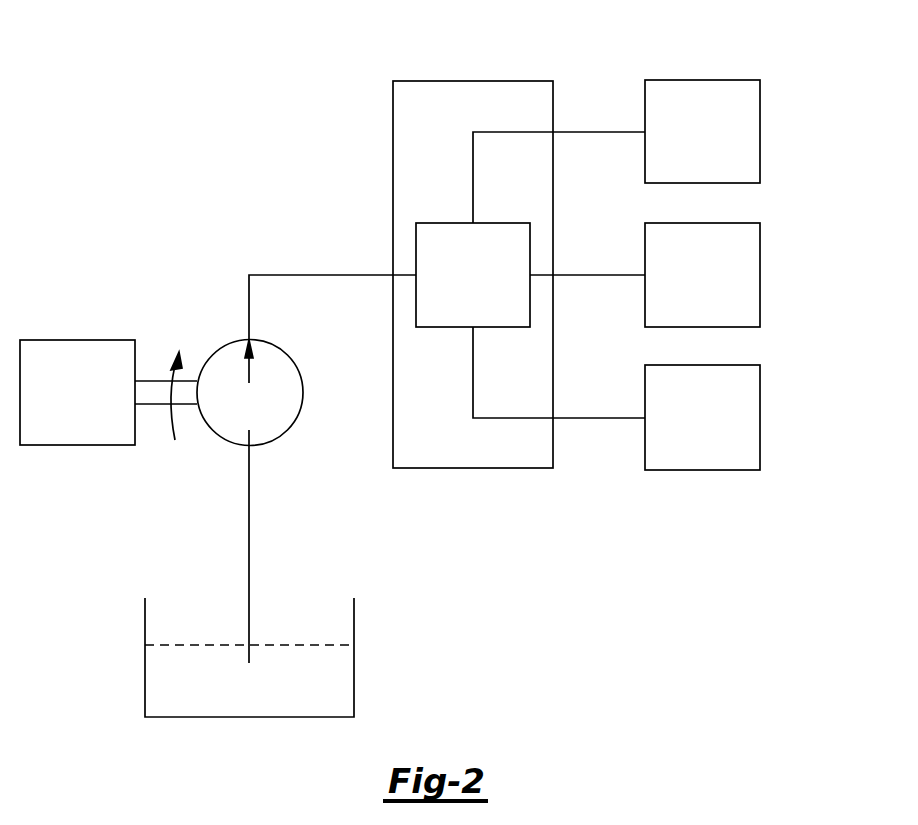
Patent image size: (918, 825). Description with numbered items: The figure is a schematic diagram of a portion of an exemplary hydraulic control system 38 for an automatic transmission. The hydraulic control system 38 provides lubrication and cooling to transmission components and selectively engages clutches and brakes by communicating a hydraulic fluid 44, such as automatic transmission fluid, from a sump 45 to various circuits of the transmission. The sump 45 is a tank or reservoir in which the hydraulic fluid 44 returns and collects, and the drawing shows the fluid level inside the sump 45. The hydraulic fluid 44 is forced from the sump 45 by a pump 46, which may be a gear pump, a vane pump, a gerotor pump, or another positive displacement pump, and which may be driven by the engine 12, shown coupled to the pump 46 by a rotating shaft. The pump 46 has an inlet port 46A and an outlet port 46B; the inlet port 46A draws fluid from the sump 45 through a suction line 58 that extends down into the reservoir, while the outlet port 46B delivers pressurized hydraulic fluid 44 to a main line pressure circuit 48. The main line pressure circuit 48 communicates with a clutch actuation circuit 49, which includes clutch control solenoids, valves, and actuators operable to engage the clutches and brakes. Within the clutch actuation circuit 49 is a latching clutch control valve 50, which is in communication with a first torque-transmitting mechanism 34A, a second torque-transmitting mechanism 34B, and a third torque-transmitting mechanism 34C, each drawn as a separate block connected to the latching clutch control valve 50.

The engine 12 is at (78, 340).
The hydraulic control system 38 is at (649, 29).
The hydraulic fluid 44 is at (290, 645).
The sump 45 is at (354, 670).
The pump 46 is at (303, 395).
The inlet port 46A is at (250, 445).
The outlet port 46B is at (250, 340).
The main line pressure circuit 48 is at (305, 275).
The clutch actuation circuit 49 is at (503, 81).
The latching clutch control valve 50 is at (485, 290).
The first torque-transmitting mechanism 34A is at (717, 149).
The second torque-transmitting mechanism 34B is at (717, 291).
The third torque-transmitting mechanism 34C is at (717, 436).
The suction line 58 is at (249, 568).